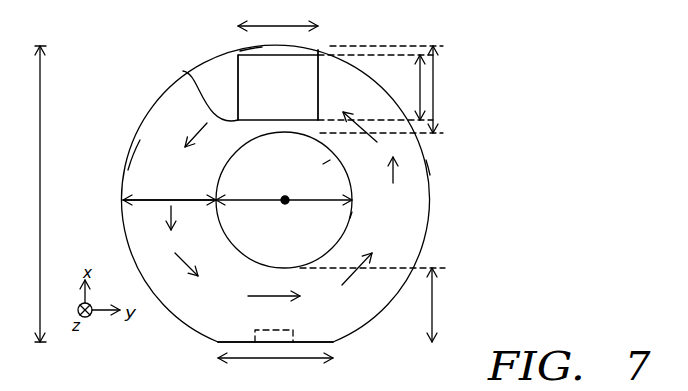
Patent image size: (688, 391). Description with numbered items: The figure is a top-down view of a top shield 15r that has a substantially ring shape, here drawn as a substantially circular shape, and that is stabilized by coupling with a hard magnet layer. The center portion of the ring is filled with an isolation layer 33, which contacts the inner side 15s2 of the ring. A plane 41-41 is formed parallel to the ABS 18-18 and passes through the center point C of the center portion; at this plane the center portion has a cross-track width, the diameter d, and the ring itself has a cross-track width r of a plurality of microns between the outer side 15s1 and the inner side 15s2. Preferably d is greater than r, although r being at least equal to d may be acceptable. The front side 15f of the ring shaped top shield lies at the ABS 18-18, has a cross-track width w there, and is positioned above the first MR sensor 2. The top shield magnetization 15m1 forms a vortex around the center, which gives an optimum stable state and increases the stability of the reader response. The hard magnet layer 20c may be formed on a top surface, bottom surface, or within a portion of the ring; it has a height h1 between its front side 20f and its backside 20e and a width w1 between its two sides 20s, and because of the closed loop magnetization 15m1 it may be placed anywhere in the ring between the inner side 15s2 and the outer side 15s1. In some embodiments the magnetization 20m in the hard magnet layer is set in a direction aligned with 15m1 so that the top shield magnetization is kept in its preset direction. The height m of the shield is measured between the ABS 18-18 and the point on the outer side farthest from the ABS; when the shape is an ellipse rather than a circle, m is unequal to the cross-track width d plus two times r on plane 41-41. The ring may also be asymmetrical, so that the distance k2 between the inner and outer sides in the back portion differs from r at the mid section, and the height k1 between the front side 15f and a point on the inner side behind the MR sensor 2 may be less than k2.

The magnetization 20m is at (298, 97).
The front side 20f is at (183, 71).
The sides 20s is at (236, 55).
The backside 20e is at (250, 51).
The hard magnet layer 20c is at (318, 50).
The front side 15f is at (285, 45).
The top shield 15r is at (150, 153).
The plane 41 is at (123, 200).
The isolation layer 33 is at (323, 164).
The outer side 15s1 is at (430, 170).
The inner side 15s2 is at (350, 218).
The ABS 18 is at (218, 342).
The first MR sensor 2 is at (283, 333).
The magnetization 15m1 is at (261, 204).
The height m is at (34, 194).
The width w1 is at (278, 19).
The height h1 is at (411, 87).
The distance k2 is at (444, 89).
The height k1 is at (443, 305).
The cross-track width r is at (169, 190).
The diameter d is at (284, 190).
The center point c is at (289, 198).
The cross-track width w is at (275, 368).